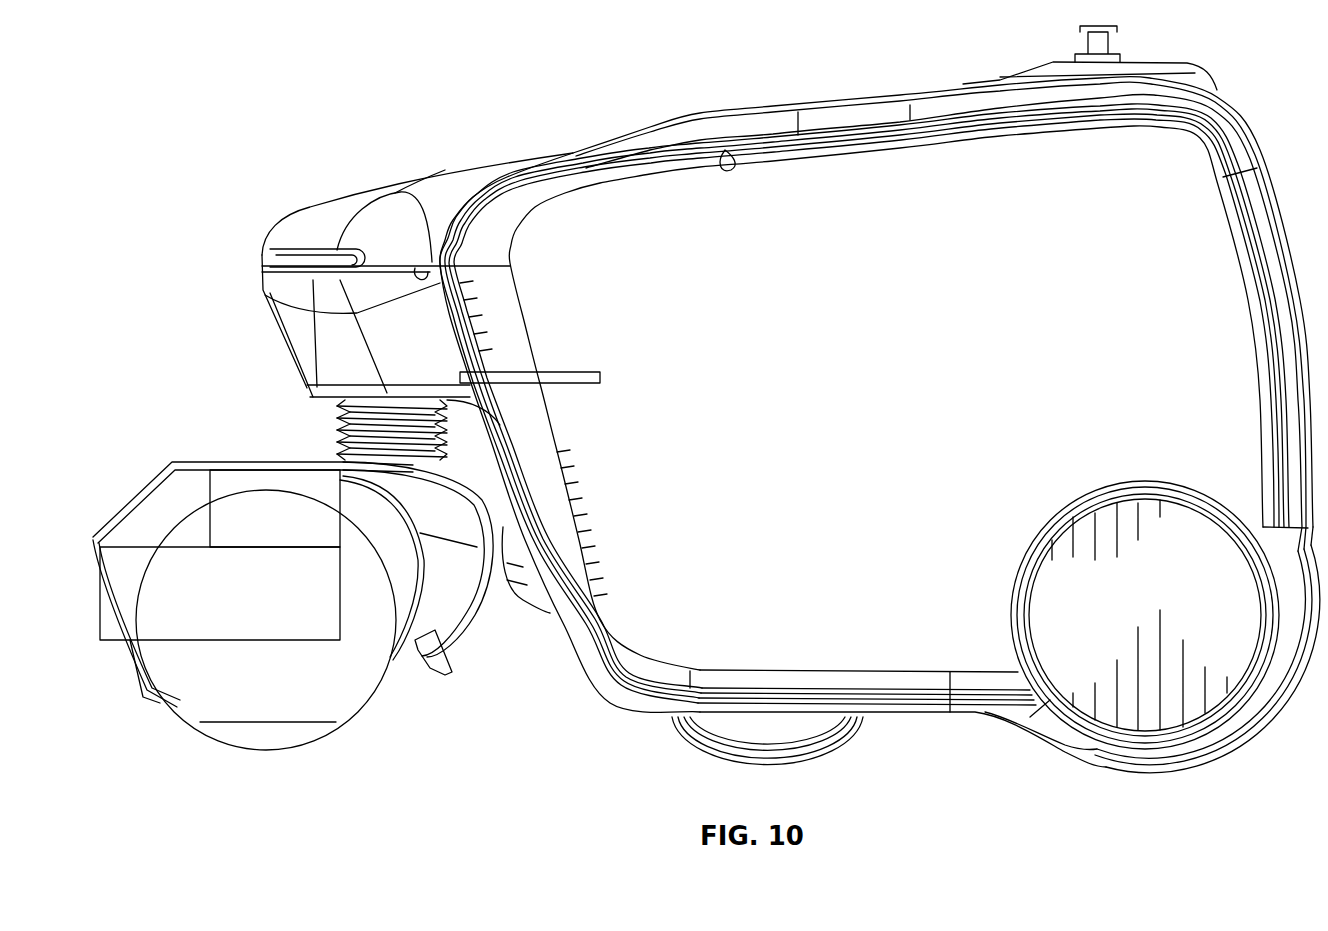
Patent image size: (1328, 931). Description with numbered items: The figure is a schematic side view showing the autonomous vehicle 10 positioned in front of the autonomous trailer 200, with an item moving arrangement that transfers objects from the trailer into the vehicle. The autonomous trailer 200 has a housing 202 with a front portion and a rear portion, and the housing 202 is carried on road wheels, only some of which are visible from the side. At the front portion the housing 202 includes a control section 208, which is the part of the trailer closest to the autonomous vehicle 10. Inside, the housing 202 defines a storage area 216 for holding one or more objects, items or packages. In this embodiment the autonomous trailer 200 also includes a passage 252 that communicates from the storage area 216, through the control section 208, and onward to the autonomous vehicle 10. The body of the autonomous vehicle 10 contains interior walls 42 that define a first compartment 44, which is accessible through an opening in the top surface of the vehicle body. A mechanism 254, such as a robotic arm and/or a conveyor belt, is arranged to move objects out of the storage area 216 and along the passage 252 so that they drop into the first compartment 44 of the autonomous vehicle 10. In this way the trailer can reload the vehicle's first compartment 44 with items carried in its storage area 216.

The autonomous trailer 200 is at (266, 55).
The housing 202 is at (638, 138).
The control section 208 is at (318, 222).
The storage area 216 is at (727, 148).
The passage 252 is at (398, 194).
The mechanism 254 is at (577, 370).
The autonomous vehicle 10 is at (147, 432).
The interior walls 42 is at (284, 531).
The first compartment 44 is at (264, 611).